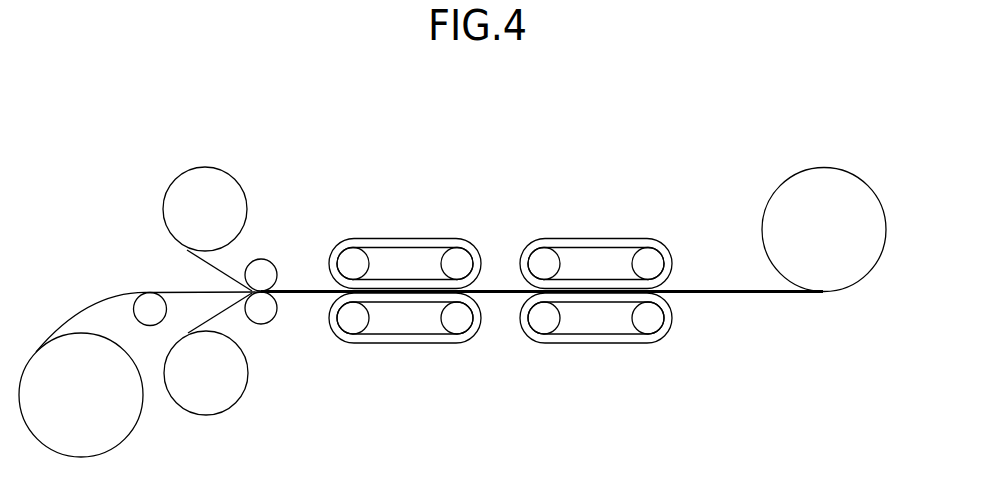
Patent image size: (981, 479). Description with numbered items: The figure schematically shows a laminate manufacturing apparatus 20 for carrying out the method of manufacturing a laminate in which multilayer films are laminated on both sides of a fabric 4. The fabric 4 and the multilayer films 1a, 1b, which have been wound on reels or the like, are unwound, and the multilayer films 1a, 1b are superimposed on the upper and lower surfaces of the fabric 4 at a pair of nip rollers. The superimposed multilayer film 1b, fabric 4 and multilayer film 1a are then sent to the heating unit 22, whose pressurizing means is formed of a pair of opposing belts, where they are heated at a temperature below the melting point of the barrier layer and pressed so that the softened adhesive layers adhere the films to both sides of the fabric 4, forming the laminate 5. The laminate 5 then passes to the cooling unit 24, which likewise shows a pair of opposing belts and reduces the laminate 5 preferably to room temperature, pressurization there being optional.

The multilayer film 1a is at (173, 183).
The multilayer film 1b is at (188, 412).
The fabric 4 is at (117, 297).
The laminate 5 is at (733, 292).
The laminate manufacturing apparatus 20 is at (871, 111).
The heating unit 22 is at (411, 215).
The cooling unit 24 is at (599, 215).